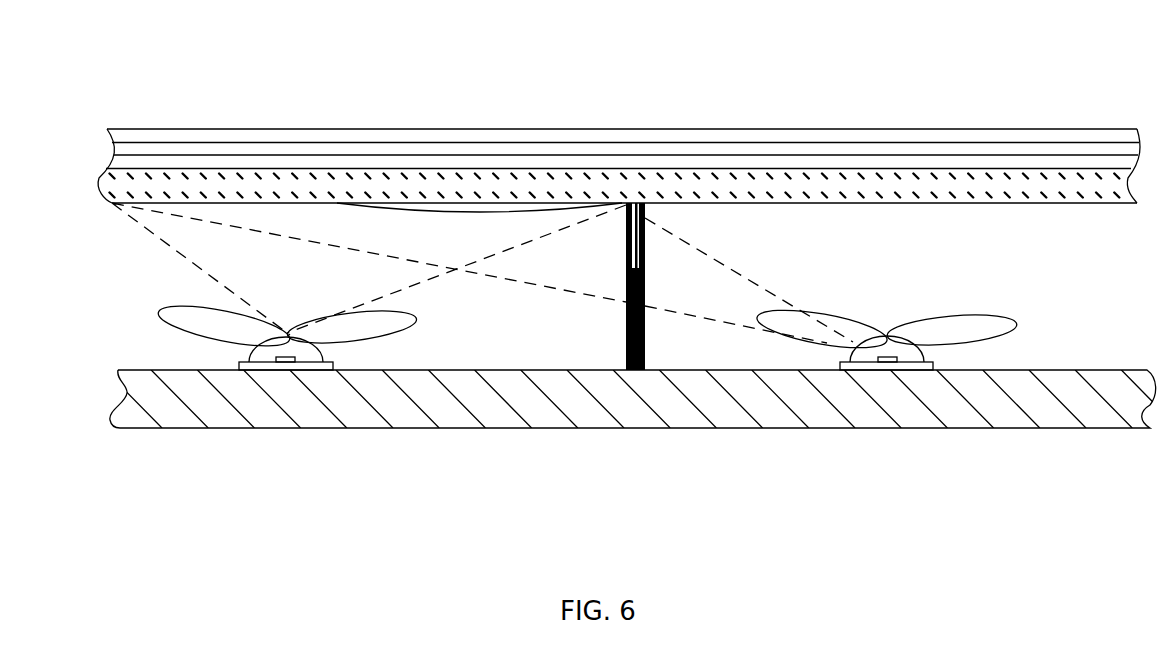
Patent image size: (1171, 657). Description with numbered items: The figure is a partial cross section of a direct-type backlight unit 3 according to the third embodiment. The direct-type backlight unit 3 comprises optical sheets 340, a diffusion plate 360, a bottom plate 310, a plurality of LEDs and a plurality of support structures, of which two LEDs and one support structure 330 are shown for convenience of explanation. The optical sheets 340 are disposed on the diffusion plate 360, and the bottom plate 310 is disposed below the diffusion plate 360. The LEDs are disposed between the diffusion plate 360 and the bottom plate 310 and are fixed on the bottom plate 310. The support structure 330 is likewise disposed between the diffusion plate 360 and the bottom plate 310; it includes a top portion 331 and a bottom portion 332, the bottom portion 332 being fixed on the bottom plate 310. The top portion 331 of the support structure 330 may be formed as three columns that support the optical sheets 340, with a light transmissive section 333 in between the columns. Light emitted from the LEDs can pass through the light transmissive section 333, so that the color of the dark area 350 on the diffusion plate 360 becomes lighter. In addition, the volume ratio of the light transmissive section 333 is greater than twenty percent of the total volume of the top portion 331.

The direct-type backlight unit 3 is at (148, 58).
The bottom plate 310 is at (143, 402).
The support structure 330 is at (730, 360).
The top portion 331 is at (649, 265).
The bottom portion 332 is at (645, 337).
The light transmissive section 333 is at (649, 248).
The optical sheets 340 is at (1106, 118).
The dark area 350 is at (477, 208).
The diffusion plate 360 is at (927, 182).